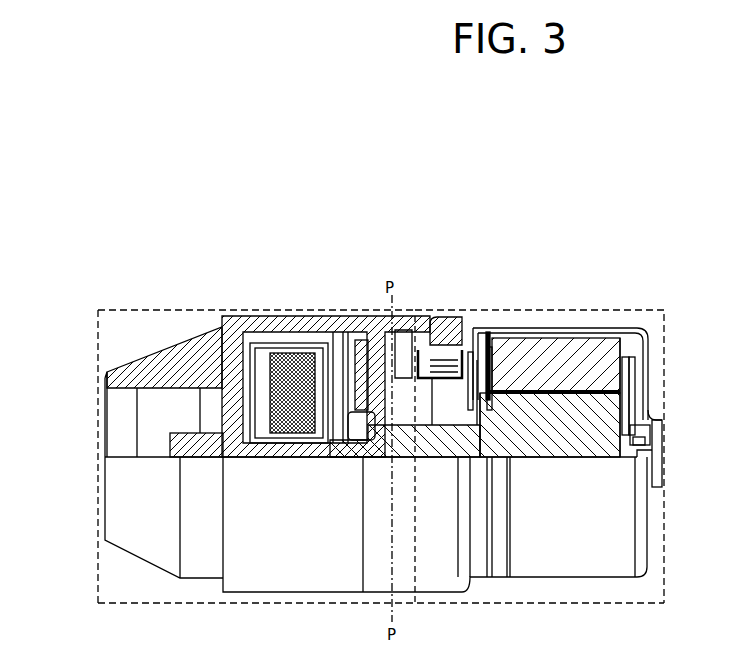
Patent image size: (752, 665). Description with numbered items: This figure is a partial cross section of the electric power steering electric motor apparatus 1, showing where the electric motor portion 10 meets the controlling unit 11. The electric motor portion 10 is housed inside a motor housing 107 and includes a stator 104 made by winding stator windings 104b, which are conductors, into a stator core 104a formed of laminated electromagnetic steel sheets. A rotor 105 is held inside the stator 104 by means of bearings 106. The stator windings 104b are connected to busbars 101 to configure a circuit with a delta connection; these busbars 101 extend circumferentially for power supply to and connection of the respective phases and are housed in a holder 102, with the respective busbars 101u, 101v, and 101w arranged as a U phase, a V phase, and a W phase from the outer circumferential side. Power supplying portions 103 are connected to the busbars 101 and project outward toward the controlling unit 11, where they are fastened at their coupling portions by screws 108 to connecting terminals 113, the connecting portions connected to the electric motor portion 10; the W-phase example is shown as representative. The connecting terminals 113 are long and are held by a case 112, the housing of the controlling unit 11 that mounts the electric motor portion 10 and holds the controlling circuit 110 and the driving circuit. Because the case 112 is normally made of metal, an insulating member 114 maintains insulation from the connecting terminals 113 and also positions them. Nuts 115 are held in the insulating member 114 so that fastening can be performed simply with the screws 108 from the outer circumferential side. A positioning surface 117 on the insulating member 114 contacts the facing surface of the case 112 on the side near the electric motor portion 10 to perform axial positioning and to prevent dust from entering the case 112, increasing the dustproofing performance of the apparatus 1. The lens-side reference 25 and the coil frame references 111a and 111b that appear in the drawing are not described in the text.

The electric power steering electric motor apparatus 1 is at (378, 398).
The electric motor portion 10 is at (648, 310).
The controlling unit 11 is at (113, 313).
The lens barrel 25 is at (193, 325).
The busbars 101 is at (537, 243).
The U-phase busbar 101u is at (487, 335).
The V-phase busbar 101v is at (471, 352).
The W-phase busbar 101w is at (490, 347).
The holder 102 is at (445, 385).
The power supplying portions 103 is at (440, 350).
The stator 104 is at (596, 328).
The stator core 104a is at (560, 393).
The stator windings 104b is at (530, 340).
The rotor 105 is at (598, 392).
The bearings 106 is at (335, 447).
The motor housing 107 is at (636, 372).
The screws 108 is at (403, 330).
The controlling circuit 110 is at (340, 340).
The outer coil frame 111a is at (258, 343).
The inner coil frame 111b is at (274, 348).
The case 112 is at (236, 338).
The connecting terminals 113 is at (355, 345).
The insulating member 114 is at (395, 349).
The nuts 115 is at (395, 372).
The positioning surface 117 is at (348, 422).